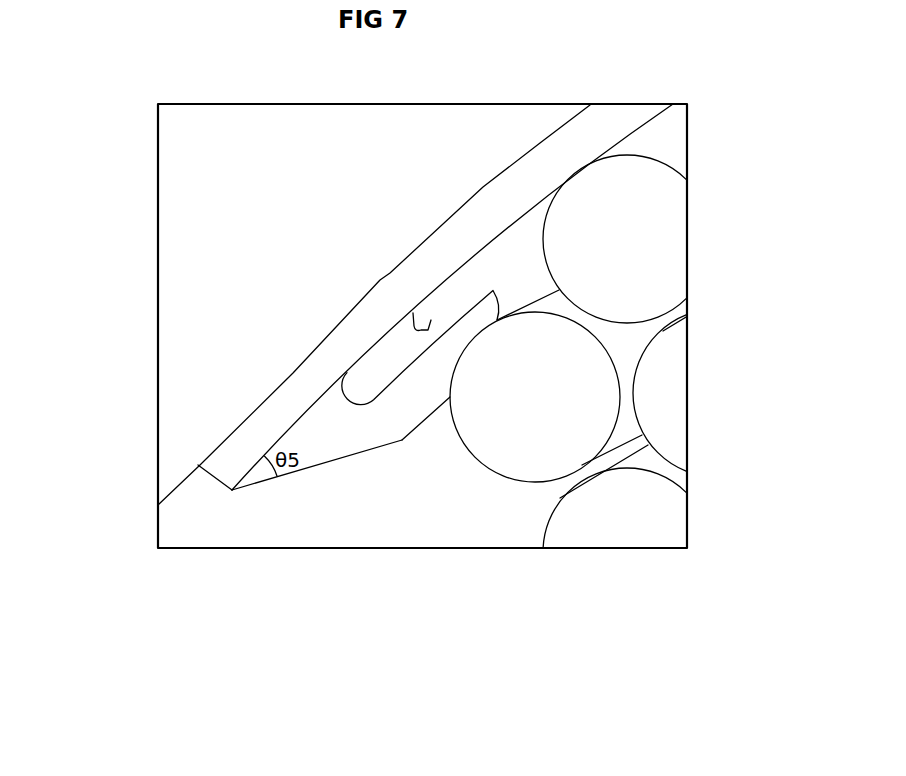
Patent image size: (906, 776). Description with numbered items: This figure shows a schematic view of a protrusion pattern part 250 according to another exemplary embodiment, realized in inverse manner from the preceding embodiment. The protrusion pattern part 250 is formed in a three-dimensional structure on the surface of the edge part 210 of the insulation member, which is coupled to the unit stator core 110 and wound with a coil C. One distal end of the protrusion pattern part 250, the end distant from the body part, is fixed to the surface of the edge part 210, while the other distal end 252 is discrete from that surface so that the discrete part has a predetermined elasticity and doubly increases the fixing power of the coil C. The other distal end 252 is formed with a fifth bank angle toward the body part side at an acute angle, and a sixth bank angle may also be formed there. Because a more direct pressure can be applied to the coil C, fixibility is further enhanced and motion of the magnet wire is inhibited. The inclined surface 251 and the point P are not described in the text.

The unit stator core 110 is at (186, 310).
The edge part 210 is at (225, 467).
The protrusion pattern part 250 is at (415, 405).
The inclined surface of guide plate 251 is at (366, 452).
The other distal end 252 is at (493, 291).
The coil C is at (668, 238).
The contact point P is at (413, 313).